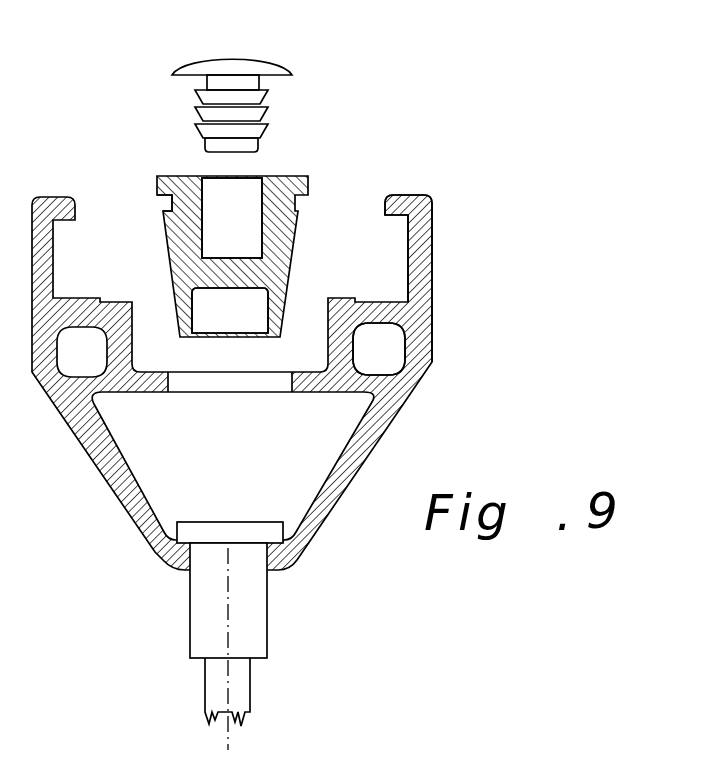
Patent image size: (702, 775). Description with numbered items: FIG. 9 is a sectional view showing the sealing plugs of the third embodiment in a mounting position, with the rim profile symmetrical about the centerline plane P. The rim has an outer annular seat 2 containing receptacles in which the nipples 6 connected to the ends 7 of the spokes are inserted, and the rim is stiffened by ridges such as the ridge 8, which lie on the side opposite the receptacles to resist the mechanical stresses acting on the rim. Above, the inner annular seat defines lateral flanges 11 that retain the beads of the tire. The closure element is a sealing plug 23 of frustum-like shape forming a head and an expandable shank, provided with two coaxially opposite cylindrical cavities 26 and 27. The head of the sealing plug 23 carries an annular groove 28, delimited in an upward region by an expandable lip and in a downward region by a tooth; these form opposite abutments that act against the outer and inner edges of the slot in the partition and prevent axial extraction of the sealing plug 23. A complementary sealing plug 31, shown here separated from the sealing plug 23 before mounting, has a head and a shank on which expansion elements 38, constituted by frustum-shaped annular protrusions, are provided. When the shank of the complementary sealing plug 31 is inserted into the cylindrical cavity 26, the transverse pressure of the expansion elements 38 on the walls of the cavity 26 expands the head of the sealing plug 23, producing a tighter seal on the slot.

The outer annular seat 2 is at (300, 468).
The nipple 6 is at (247, 618).
The spoke end 7 is at (240, 685).
The ridge 8 is at (383, 358).
The lateral flange 11 is at (417, 238).
The sealing plug 23 is at (320, 176).
The cylindrical cavity 26 is at (251, 231).
The cylindrical cavity 27 is at (213, 310).
The annular groove 28 is at (157, 203).
The complementary sealing plug 31 is at (293, 50).
The expansion elements 38 is at (178, 113).
The centerline plane P is at (228, 738).